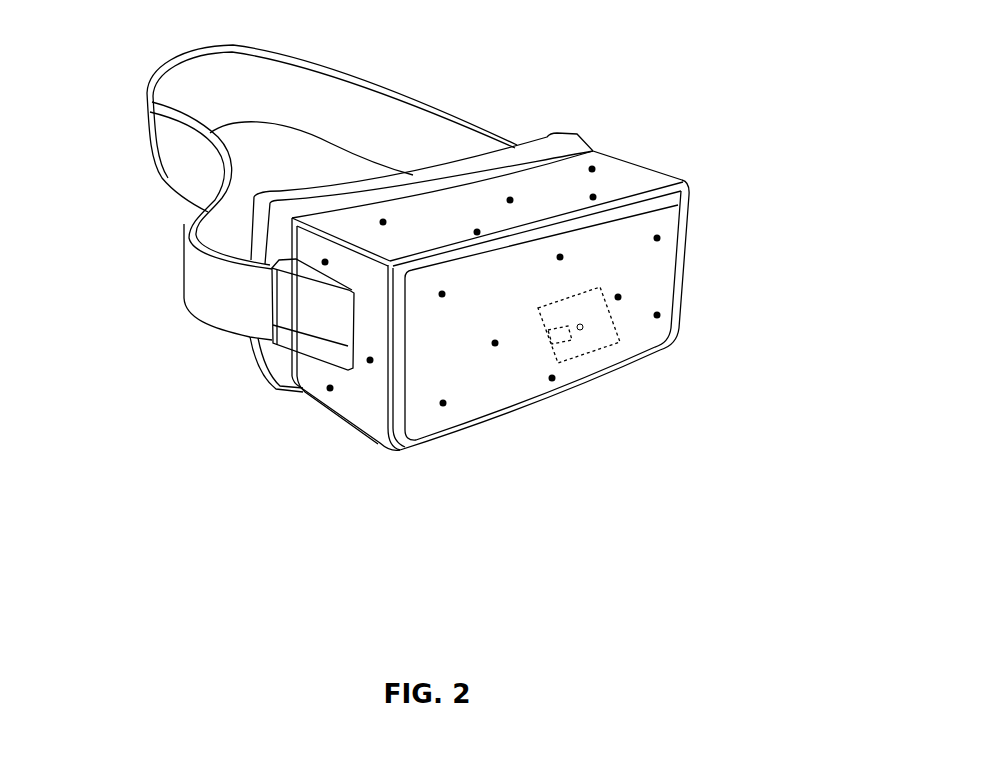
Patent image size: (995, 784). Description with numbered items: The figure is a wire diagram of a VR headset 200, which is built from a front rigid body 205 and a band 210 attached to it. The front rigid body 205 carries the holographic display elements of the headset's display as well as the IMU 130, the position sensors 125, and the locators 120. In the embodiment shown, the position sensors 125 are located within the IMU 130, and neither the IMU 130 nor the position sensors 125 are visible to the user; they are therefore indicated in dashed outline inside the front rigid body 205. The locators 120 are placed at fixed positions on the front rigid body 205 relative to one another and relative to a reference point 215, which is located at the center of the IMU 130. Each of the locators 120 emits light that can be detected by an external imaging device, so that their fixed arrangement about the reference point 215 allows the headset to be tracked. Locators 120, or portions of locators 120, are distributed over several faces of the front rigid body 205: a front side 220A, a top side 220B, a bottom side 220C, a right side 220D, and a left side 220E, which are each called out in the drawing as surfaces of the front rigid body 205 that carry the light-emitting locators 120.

The VR headset 200 is at (74, 48).
The band 210 is at (422, 104).
The front rigid body 205 is at (473, 309).
The front side 220A is at (429, 434).
The top side 220B is at (352, 220).
The bottom side 220C is at (324, 430).
The right side 220D is at (360, 402).
The left side 220E is at (662, 163).
The locators 120 is at (669, 308).
The position sensors 125 is at (555, 356).
The IMU 130 is at (636, 346).
The reference point 215 is at (585, 345).